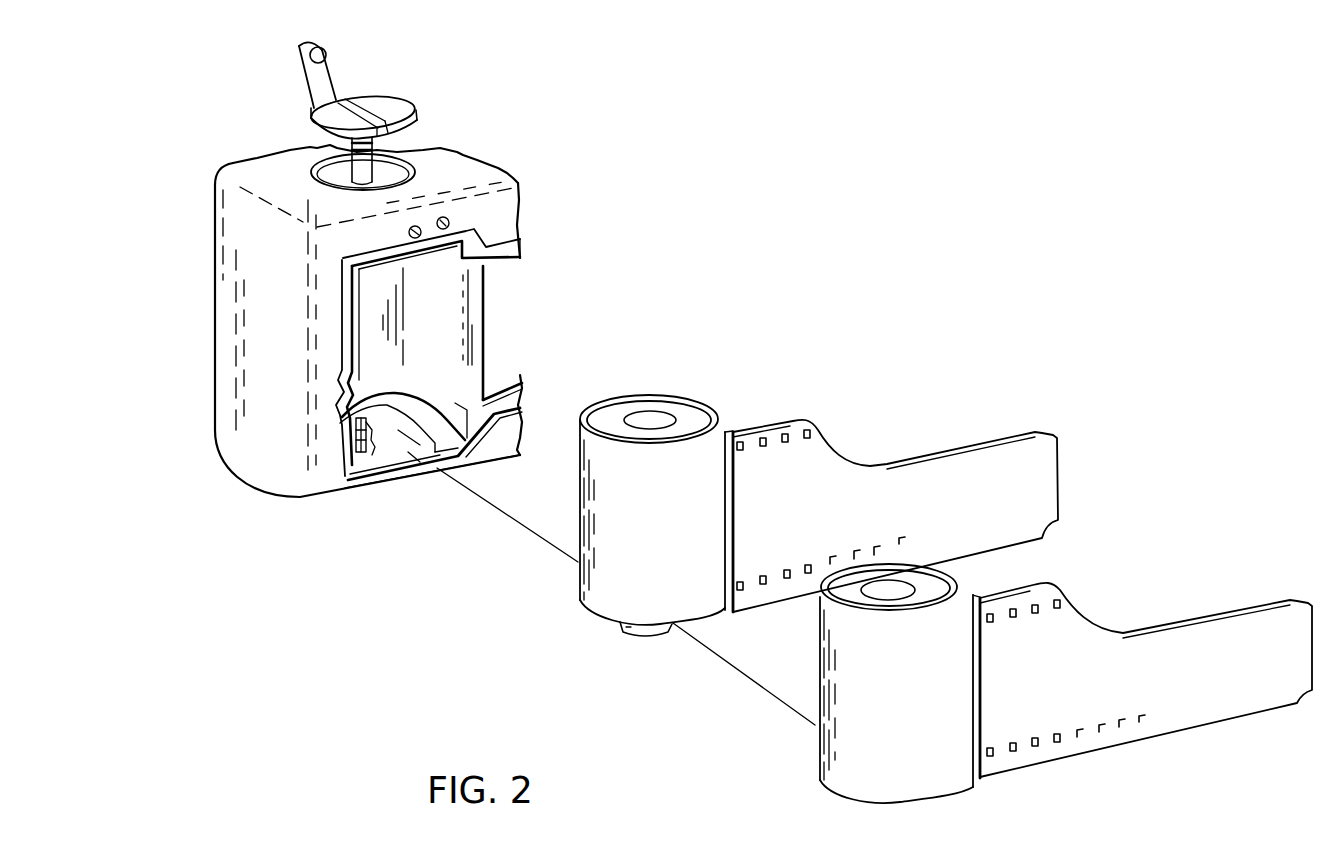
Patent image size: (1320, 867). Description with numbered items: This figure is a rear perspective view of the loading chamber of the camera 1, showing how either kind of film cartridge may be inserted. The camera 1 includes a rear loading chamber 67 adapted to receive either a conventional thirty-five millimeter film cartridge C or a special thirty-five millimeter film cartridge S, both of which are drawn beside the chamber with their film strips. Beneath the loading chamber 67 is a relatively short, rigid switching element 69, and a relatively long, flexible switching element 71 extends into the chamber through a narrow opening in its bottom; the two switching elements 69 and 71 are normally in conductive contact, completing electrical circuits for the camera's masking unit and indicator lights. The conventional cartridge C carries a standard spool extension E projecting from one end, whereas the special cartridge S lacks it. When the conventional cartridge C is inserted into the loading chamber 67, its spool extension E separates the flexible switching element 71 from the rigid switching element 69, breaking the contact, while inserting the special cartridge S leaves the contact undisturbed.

The camera 1 is at (233, 163).
The rear loading chamber 67 is at (455, 293).
The rigid switching element 69 is at (357, 420).
The flexible switching element 71 is at (363, 432).
The conventional film cartridge C is at (675, 590).
The spool extension E is at (635, 636).
The special film cartridge S is at (937, 770).